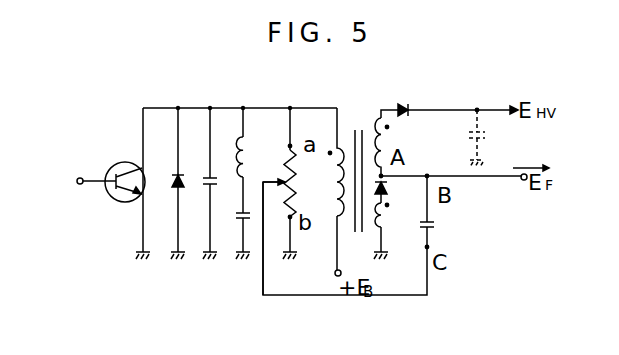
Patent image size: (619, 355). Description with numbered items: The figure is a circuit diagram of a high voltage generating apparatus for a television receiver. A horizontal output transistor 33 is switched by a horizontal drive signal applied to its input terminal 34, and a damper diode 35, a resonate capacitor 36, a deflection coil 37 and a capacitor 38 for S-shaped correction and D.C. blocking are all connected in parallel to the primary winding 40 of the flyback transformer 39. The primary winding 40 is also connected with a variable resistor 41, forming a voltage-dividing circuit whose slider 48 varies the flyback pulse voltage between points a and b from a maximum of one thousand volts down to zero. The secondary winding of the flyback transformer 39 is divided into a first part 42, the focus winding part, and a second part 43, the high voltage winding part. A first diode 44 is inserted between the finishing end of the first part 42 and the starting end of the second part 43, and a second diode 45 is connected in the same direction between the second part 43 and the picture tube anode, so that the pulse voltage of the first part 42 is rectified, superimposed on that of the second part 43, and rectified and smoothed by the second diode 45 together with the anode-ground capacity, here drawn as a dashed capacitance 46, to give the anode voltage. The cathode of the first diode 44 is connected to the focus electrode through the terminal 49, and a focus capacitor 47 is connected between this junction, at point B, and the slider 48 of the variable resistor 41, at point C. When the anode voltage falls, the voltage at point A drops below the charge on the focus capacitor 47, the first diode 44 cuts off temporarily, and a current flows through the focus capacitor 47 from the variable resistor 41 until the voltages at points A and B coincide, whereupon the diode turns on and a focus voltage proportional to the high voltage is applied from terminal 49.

The horizontal output transistor 33 is at (112, 199).
The input terminal 34 is at (76, 179).
The damper diode 35 is at (182, 174).
The resonate capacitor 36 is at (213, 177).
The deflection coil 37 is at (250, 166).
The capacitor for S-shaped correction and D.C. blocking 38 is at (238, 218).
The flyback transformer 39 is at (372, 128).
The primary winding 40 is at (337, 216).
The variable resistor 41 is at (298, 178).
The first part of the secondary winding 42 is at (384, 224).
The second part of the secondary winding 43 is at (386, 138).
The first diode 44 is at (386, 190).
The second diode 45 is at (402, 106).
The stray capacitance 46 is at (485, 134).
The focus capacitor 47 is at (436, 226).
The slider 48 is at (267, 186).
The terminal 49 is at (524, 181).